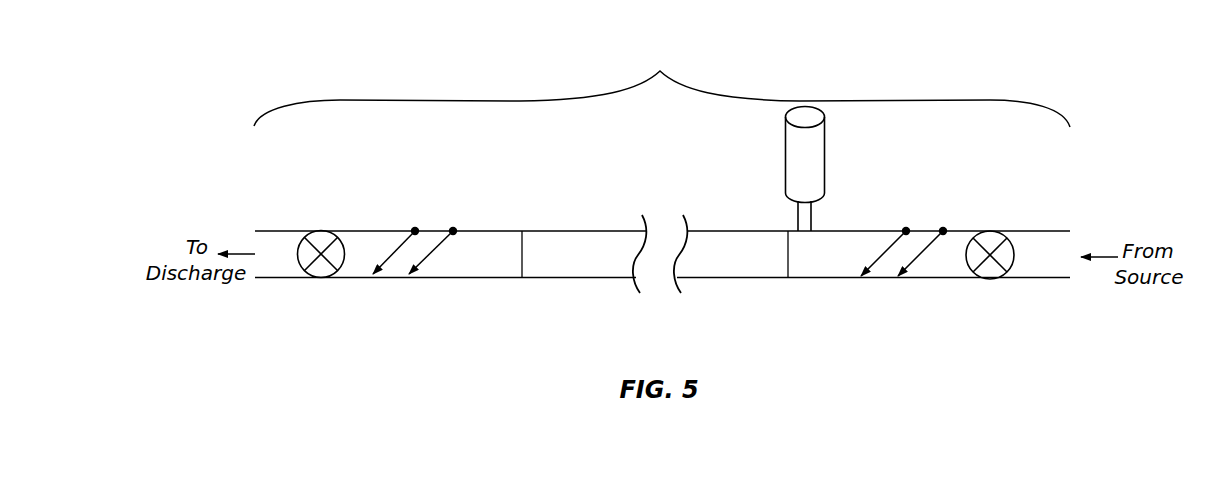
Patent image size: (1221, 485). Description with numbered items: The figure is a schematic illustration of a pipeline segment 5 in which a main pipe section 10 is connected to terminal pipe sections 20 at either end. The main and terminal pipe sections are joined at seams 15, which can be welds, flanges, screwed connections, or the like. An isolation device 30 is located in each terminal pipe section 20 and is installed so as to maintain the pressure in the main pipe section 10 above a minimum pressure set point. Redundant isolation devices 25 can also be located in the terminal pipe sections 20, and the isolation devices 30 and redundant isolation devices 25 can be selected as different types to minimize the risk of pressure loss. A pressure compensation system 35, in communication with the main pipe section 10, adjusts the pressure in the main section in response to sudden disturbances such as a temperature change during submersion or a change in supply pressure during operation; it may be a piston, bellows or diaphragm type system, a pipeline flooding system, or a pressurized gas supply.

The pipeline segment 5 is at (662, 80).
The main pipe section 10 is at (662, 258).
The seams 15 is at (524, 283).
The terminal pipe sections 20 is at (468, 282).
The redundant isolation devices 25 is at (899, 216).
The isolation device 30 is at (993, 224).
The pressure compensation system 35 is at (793, 165).